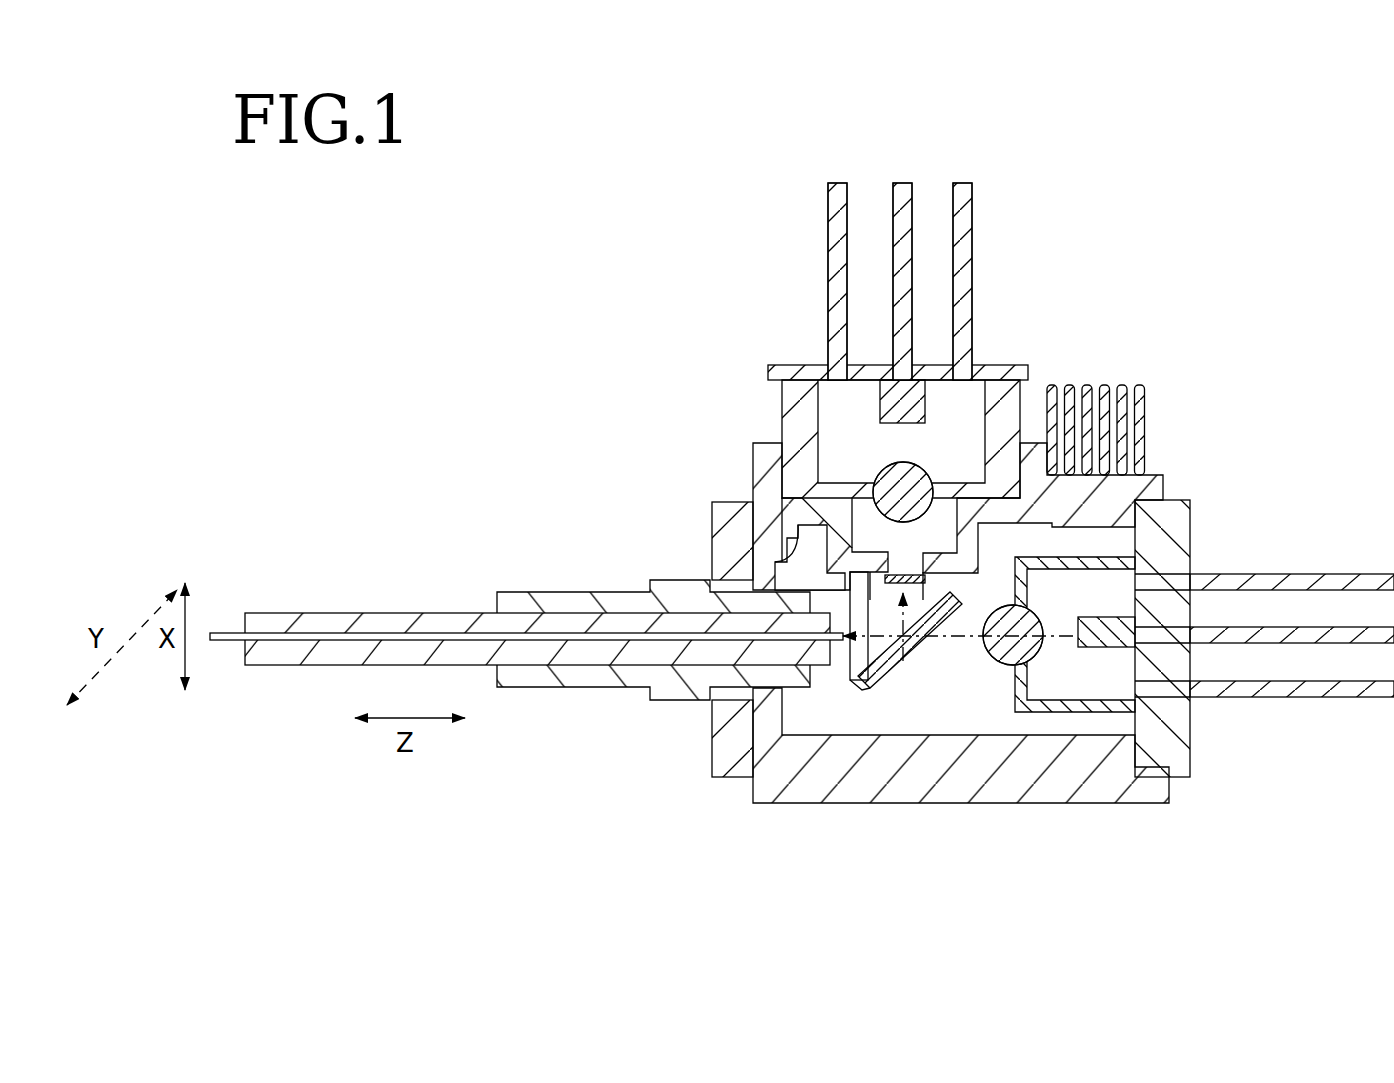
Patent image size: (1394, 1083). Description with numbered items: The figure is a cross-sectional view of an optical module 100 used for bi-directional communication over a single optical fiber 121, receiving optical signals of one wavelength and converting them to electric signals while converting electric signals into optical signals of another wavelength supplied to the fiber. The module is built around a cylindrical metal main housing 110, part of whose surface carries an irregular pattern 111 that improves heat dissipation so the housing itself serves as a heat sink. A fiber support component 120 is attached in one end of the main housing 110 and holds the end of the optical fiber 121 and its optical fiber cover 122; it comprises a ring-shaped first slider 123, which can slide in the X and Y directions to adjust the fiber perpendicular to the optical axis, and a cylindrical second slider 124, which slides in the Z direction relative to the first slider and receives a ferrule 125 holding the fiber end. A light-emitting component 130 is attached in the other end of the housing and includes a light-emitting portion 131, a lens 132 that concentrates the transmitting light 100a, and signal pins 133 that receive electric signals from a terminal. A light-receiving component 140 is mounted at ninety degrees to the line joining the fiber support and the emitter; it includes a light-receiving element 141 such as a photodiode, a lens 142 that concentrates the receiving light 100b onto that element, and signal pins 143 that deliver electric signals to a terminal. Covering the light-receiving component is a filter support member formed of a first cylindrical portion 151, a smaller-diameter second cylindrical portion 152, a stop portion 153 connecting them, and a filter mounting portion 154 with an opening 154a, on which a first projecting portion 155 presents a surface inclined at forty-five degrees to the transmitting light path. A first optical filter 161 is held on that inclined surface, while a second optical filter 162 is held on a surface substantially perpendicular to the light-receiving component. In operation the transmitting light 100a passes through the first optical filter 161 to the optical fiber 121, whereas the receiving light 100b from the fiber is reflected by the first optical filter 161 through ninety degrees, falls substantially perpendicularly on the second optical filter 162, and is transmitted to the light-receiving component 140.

The optical module 100 is at (1140, 148).
The transmitting light 100a is at (1057, 636).
The receiving light 100b is at (906, 662).
The main housing 110 is at (753, 462).
The irregular pattern 111 is at (1120, 378).
The fiber support component 120 is at (700, 508).
The optical fiber 121 is at (223, 640).
The optical fiber cover 122 is at (413, 613).
The first slider 123 is at (712, 740).
The second slider 124 is at (535, 592).
The ferrule 125 is at (818, 690).
The light-emitting component 130 is at (1210, 728).
The light-emitting portion 131 is at (1082, 650).
The lens 132 is at (1000, 665).
The signal pins 133 is at (1304, 681).
The light-receiving component 140 is at (785, 300).
The light-receiving element 141 is at (905, 385).
The lens 142 is at (920, 467).
The signal pins 143 is at (961, 183).
The first cylindrical portion 151 is at (783, 392).
The second cylindrical portion 152 is at (985, 570).
The stop portion 153 is at (812, 526).
The filter mounting portion 154 is at (1000, 552).
The opening 154a is at (898, 552).
The first projecting portion 155 is at (848, 598).
The first optical filter 161 is at (893, 665).
The second optical filter 162 is at (908, 570).